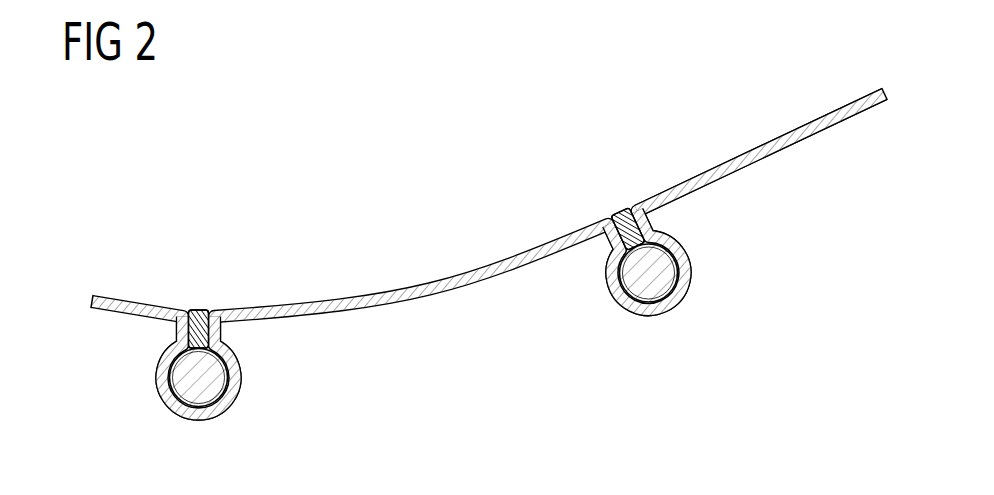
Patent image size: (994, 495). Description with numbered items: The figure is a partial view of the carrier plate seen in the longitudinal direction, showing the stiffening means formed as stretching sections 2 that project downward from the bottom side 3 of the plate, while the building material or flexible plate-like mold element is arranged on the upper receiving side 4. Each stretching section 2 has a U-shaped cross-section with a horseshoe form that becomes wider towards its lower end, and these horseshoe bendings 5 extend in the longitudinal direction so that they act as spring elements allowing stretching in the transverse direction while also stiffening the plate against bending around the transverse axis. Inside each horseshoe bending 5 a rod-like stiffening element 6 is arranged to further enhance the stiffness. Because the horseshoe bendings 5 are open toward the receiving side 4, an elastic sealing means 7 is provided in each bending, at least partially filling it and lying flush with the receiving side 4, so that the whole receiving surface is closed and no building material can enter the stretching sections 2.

The stretching section 2 is at (422, 291).
The bottom side 3 is at (408, 300).
The upper receiving side 4 is at (758, 148).
The horseshoe bending 5 is at (160, 390).
The stiffening element 6 is at (208, 390).
The elastic sealing means 7 is at (199, 310).